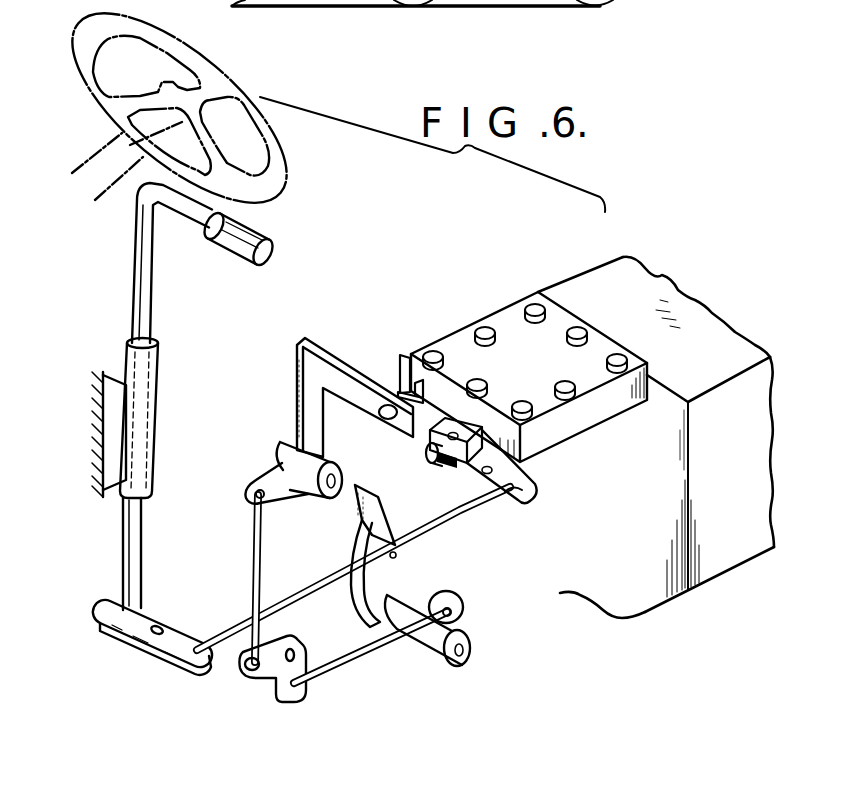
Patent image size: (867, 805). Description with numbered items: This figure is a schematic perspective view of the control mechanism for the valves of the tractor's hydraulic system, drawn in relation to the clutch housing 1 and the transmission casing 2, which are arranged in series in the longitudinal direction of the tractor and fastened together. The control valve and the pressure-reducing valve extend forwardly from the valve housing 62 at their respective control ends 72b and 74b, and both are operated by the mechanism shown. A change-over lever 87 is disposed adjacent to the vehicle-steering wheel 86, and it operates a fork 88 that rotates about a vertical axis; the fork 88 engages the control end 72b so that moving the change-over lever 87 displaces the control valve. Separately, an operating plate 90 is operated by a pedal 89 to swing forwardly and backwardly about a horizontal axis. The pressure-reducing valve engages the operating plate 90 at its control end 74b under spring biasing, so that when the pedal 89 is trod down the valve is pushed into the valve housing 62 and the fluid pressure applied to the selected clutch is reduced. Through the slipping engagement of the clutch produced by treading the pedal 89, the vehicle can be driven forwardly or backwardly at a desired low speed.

The clutch housing 1 is at (645, 568).
The transmission casing 2 is at (613, 287).
The valve housing 62 is at (512, 320).
The control end 72b is at (526, 462).
The control end 74b is at (412, 360).
The vehicle-steering wheel 86 is at (217, 78).
The change-over lever 87 is at (270, 234).
The fork 88 is at (460, 420).
The pedal 89 is at (377, 503).
The operating plate 90 is at (350, 383).